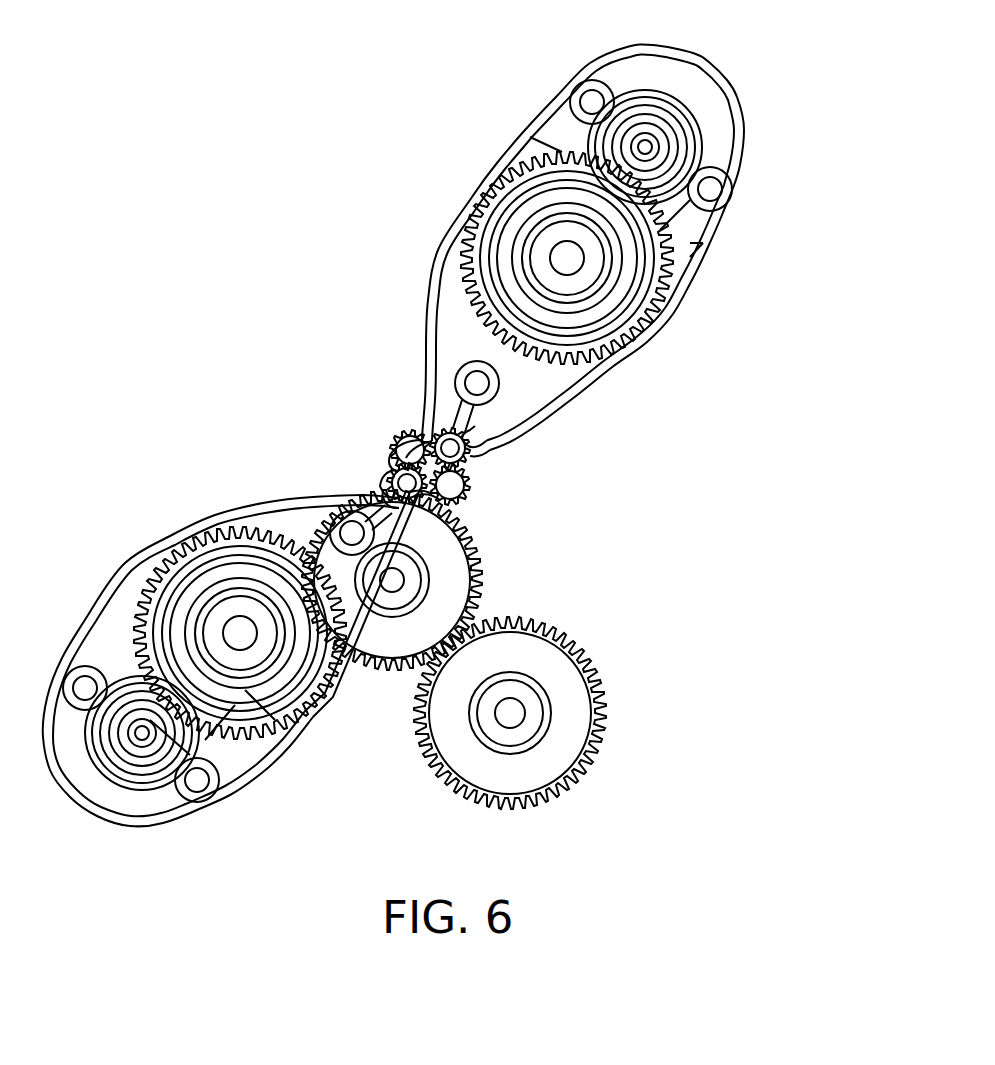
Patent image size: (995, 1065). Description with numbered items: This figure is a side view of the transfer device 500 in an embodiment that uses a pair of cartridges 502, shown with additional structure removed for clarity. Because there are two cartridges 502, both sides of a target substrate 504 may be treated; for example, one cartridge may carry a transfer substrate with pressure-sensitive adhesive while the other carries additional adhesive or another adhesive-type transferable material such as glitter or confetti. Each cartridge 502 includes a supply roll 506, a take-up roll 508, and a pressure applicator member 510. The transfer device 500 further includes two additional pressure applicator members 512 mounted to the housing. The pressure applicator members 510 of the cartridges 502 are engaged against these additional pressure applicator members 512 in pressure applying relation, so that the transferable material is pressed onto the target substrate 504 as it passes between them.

The transfer device 500 is at (199, 112).
The cartridges 502 is at (600, 63).
The target substrate 504 is at (524, 461).
The supply roll 506 is at (533, 223).
The take-up roll 508 is at (673, 143).
The pressure applicator member 510 is at (442, 438).
The additional pressure applicator members 512 is at (405, 434).